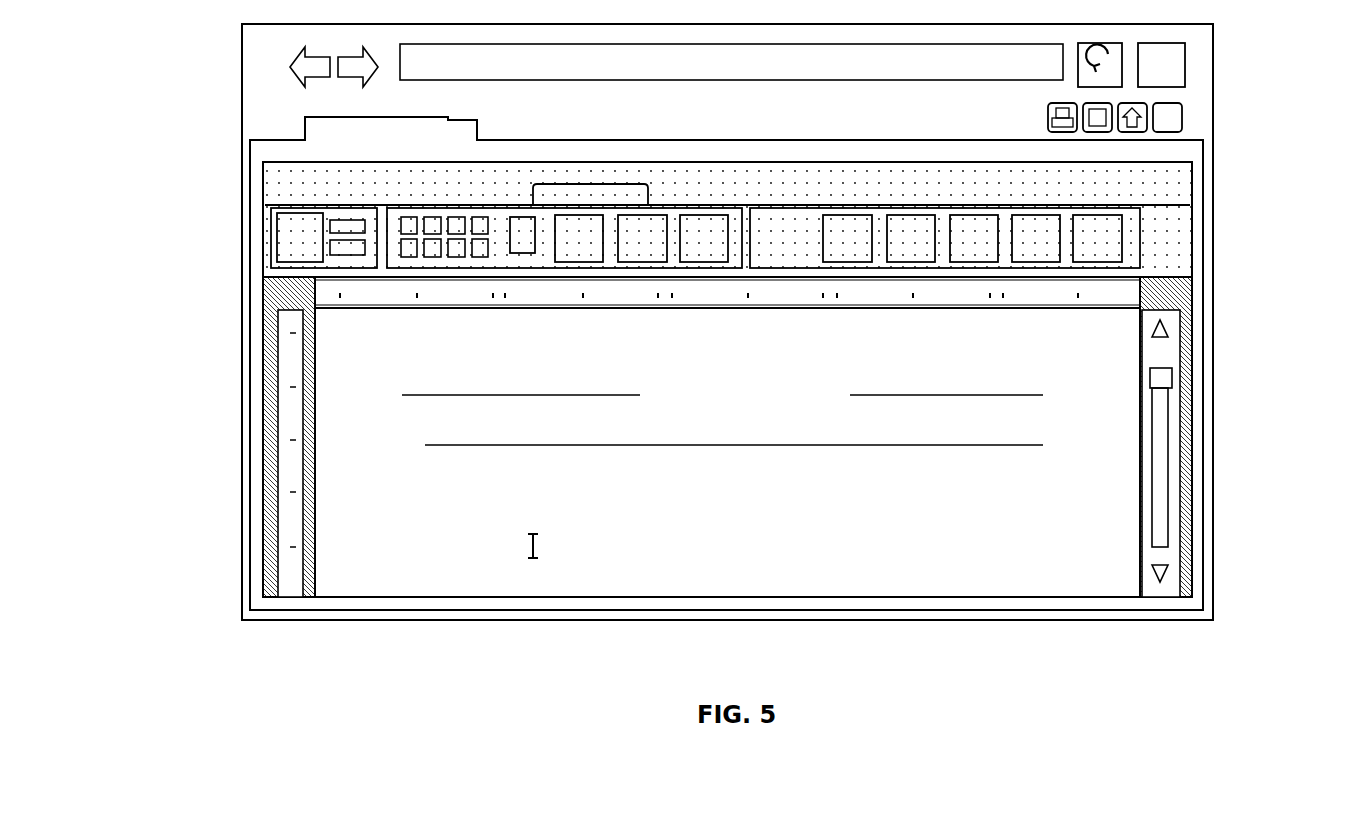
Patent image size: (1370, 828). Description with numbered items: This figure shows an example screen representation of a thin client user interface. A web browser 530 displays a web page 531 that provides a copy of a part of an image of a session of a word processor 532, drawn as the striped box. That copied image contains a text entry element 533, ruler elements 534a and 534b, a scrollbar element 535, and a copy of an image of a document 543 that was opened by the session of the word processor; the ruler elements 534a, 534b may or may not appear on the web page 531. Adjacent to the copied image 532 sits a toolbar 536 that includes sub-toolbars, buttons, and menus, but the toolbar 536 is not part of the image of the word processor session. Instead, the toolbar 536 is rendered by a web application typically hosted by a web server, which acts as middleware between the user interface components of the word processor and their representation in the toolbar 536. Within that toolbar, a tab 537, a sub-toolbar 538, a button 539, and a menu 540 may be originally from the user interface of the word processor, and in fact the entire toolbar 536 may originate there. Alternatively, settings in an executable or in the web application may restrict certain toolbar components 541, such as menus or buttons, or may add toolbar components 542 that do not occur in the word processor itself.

The web browser 530 is at (242, 63).
The web page 531 is at (250, 148).
The copy of an image of a session of a word processor 532 is at (265, 410).
The text entry element 533 is at (528, 548).
The ruler element 534a is at (312, 289).
The ruler element 534b is at (277, 330).
The scrollbar element 535 is at (1180, 350).
The toolbar 536 is at (265, 193).
The tab 537 is at (633, 185).
The sub-toolbar 538 is at (1142, 248).
The button 539 is at (522, 217).
The menu 540 is at (1182, 210).
The restricted toolbar components 541 is at (787, 212).
The added toolbar components 542 is at (471, 172).
The copy of an image of a document 543 is at (318, 483).